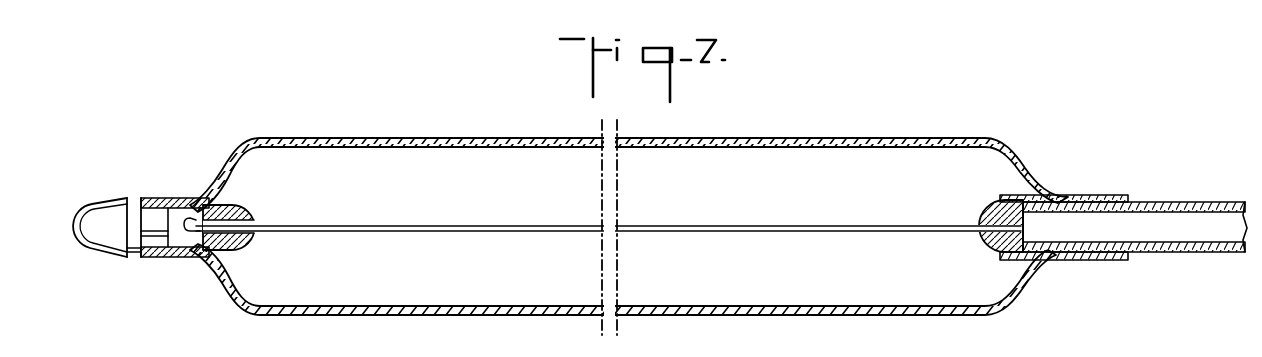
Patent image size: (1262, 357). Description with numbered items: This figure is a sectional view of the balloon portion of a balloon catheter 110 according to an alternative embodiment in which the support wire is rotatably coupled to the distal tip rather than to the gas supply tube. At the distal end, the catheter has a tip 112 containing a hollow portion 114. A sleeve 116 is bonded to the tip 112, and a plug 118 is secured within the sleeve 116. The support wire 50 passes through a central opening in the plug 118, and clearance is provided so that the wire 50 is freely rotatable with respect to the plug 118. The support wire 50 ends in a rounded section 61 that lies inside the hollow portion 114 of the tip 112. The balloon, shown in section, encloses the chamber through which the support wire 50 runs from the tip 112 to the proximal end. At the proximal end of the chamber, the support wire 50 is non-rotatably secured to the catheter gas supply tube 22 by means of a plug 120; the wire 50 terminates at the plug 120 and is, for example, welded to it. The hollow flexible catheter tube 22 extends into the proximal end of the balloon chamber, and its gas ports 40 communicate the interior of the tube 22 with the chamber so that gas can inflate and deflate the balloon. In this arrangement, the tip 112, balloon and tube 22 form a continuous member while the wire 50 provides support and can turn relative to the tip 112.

The catheter gas supply tube 22 is at (1180, 254).
The gas ports 40 is at (1035, 254).
The support wire 50 is at (733, 223).
The rounded section 61 is at (186, 223).
The catheter 110 is at (733, 128).
The tip 112 is at (77, 197).
The hollow portion 114 is at (176, 214).
The sleeve 116 is at (222, 202).
The plug 118 is at (252, 213).
The plug 120 is at (984, 208).